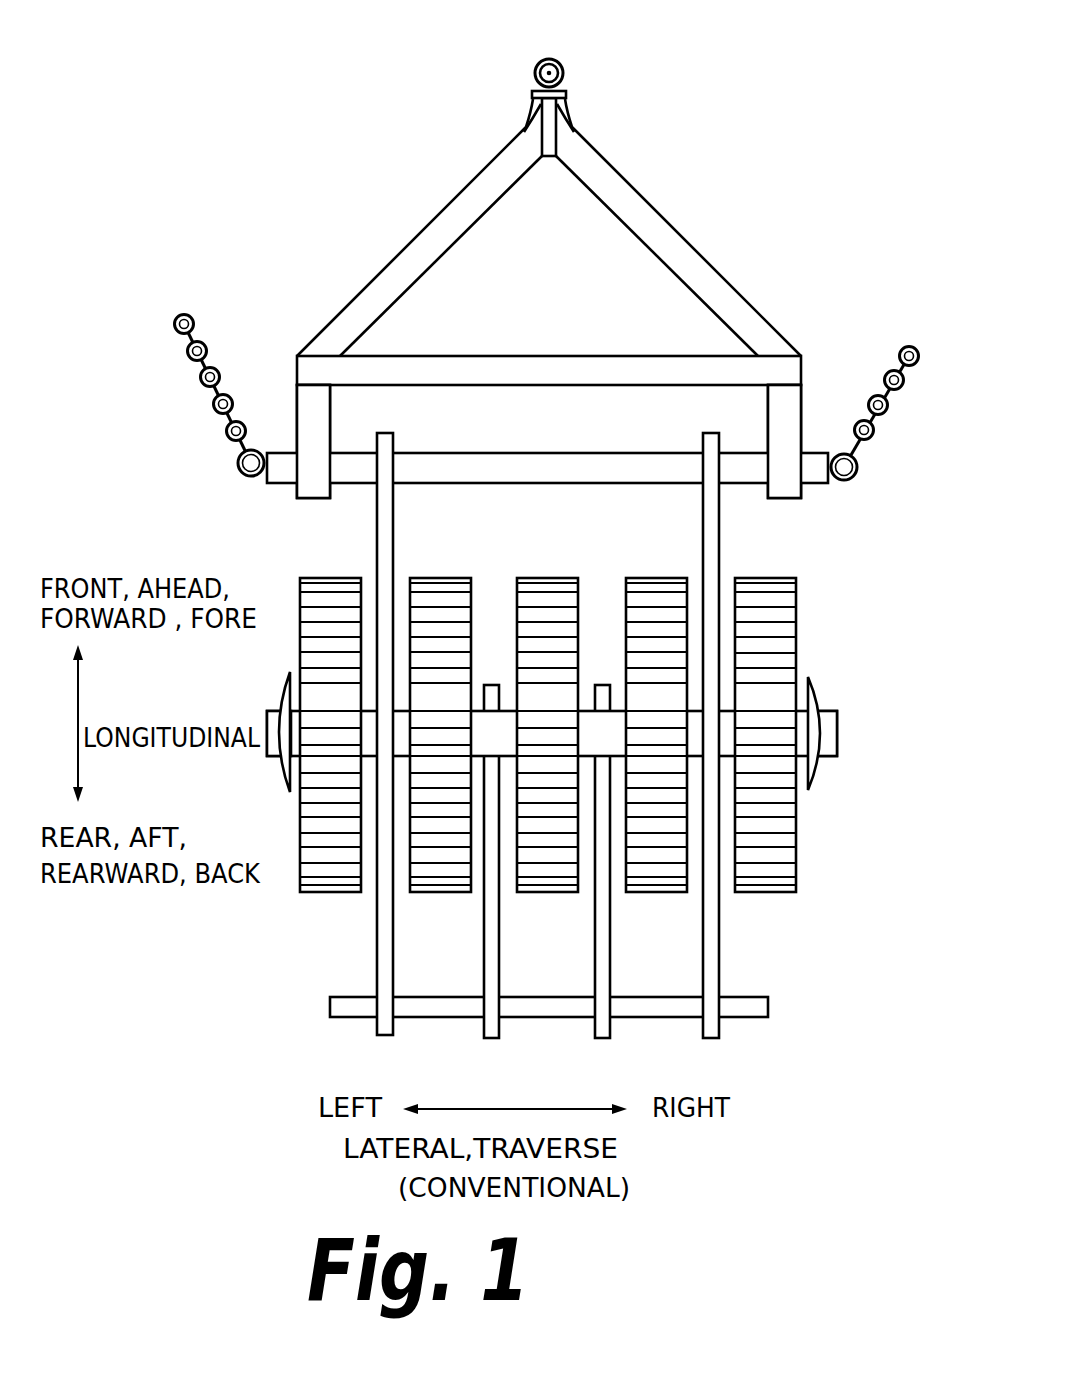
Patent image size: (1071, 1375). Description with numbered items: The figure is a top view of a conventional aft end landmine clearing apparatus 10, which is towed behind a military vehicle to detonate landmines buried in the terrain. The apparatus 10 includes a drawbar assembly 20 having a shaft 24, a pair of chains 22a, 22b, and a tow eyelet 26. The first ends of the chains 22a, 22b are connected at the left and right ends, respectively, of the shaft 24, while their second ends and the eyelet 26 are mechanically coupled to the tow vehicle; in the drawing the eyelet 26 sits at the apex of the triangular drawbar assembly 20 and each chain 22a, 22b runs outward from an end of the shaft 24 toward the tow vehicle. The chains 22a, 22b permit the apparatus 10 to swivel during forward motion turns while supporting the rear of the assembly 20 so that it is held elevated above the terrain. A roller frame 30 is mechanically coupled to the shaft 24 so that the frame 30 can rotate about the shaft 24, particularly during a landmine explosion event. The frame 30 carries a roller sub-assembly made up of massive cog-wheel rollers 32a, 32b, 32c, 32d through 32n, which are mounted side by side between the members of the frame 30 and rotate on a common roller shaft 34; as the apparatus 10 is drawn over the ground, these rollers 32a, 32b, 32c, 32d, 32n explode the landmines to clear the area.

The aft end landmine clearing apparatus 10 is at (365, 150).
The drawbar assembly 20 is at (666, 235).
The chain 22a is at (208, 392).
The chain 22b is at (878, 417).
The shaft 24 is at (491, 455).
The tow eyelet 26 is at (565, 70).
The roller frame 30 is at (389, 530).
The cog-wheel roller 32a is at (316, 890).
The cog-wheel roller 32b is at (430, 890).
The cog-wheel roller 32c is at (530, 890).
The cog-wheel roller 32d is at (652, 888).
The cog-wheel roller 32n is at (757, 890).
The roller shaft 34 is at (833, 730).